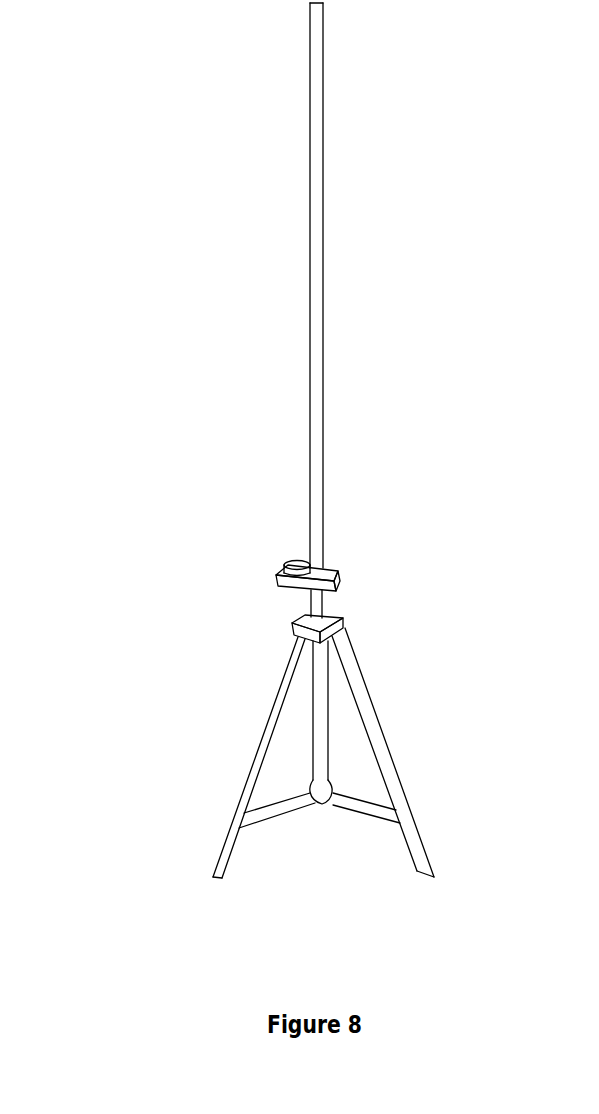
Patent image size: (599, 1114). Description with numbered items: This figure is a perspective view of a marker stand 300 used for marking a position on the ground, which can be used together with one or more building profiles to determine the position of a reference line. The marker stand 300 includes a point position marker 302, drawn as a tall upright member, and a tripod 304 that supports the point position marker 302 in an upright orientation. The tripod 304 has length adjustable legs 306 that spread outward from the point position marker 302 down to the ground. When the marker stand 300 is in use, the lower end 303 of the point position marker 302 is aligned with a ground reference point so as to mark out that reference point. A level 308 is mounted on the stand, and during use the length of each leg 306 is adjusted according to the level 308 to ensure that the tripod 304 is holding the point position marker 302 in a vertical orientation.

The marker stand 300 is at (132, 112).
The point position marker 302 is at (318, 275).
The lower end 303 is at (323, 814).
The tripod 304 is at (404, 657).
The legs 306 is at (393, 773).
The level 308 is at (288, 556).